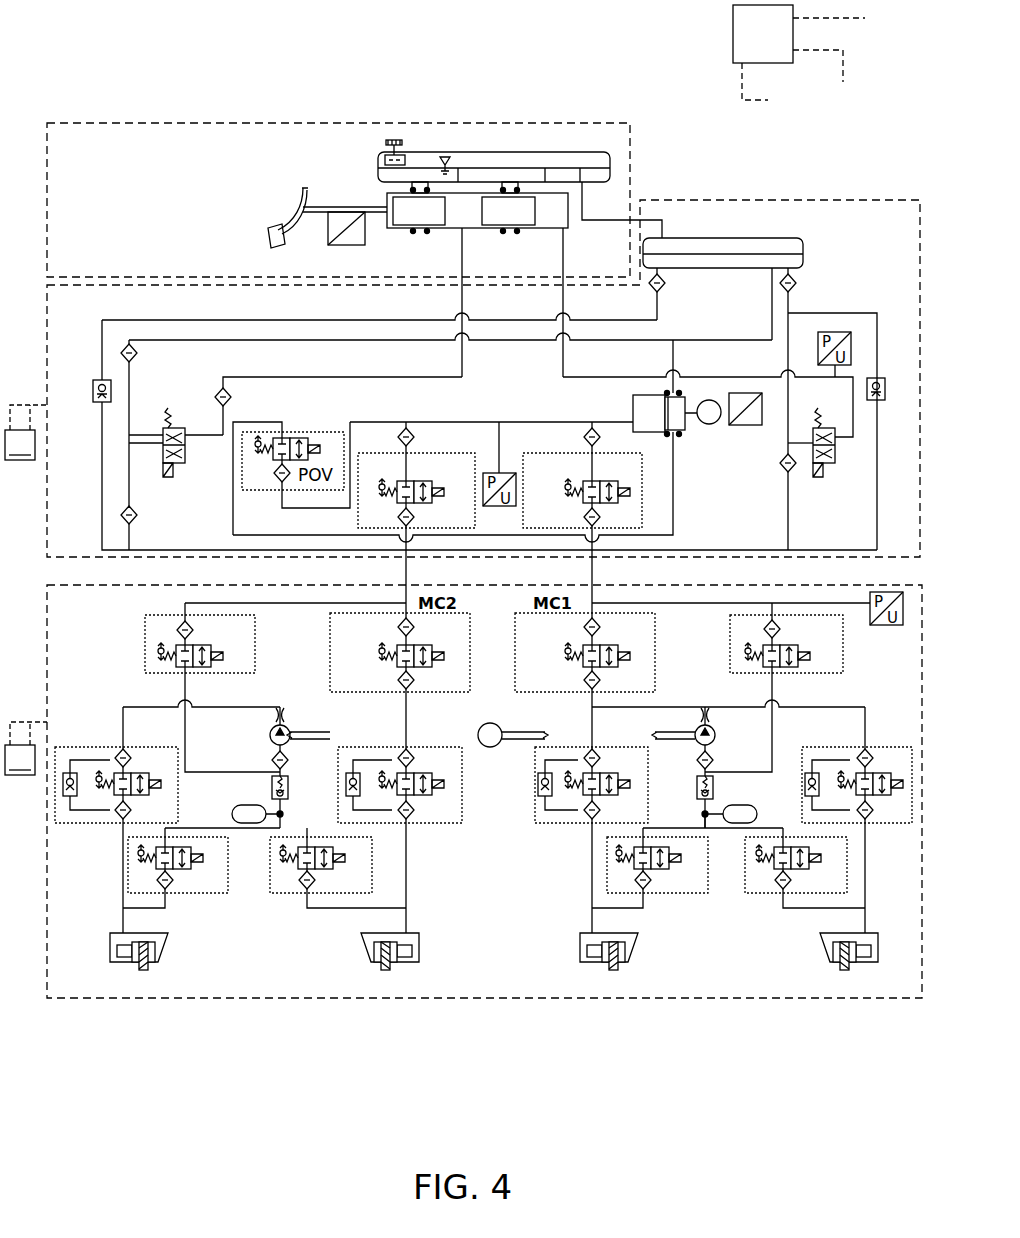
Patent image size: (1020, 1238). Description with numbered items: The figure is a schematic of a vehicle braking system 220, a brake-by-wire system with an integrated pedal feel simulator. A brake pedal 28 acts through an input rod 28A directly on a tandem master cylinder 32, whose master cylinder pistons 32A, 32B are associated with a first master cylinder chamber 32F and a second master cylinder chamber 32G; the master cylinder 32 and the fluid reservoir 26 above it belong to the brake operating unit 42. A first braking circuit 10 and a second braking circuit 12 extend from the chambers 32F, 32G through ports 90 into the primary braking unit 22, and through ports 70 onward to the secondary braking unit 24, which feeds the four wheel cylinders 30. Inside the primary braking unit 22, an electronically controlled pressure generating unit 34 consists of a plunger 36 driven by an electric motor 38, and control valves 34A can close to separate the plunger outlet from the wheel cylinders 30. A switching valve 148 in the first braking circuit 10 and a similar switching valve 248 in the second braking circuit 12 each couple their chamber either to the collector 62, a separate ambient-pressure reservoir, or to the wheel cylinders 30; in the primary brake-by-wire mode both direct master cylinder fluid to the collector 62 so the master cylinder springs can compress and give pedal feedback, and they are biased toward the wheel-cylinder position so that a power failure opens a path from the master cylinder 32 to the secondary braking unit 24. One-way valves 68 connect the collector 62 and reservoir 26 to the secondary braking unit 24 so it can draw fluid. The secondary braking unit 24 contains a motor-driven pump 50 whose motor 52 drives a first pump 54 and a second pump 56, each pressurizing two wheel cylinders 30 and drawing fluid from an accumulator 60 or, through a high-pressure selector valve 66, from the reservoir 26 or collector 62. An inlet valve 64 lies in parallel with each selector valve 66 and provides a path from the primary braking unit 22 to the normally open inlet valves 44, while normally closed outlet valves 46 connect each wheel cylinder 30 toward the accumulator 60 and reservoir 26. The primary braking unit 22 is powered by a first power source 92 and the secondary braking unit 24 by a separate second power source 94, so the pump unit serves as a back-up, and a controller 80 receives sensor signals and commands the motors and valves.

The vehicle braking system 220 is at (563, 58).
The controller 80 is at (770, 46).
The first master cylinder chamber 32F is at (470, 212).
The master cylinder piston 32B is at (533, 205).
The second master cylinder chamber 32G is at (557, 210).
The fluid reservoir 26 is at (614, 152).
The port 90 is at (640, 218).
The primary braking unit 22 is at (790, 200).
The collector 62 is at (805, 250).
The input rod 28A is at (340, 208).
The brake pedal 28 is at (268, 236).
The master cylinder piston 32A is at (413, 230).
The master cylinder 32 is at (458, 236).
The brake operating unit 42 is at (562, 238).
The switching valve 148 is at (173, 425).
The one-way valve 68 is at (92, 392).
The first power source 92 is at (26, 432).
The first braking circuit 10 is at (390, 378).
The second braking circuit 12 is at (575, 378).
The plunger 36 is at (664, 410).
The electric motor 38 is at (709, 398).
The control valve 34A is at (432, 455).
The electronically controlled pressure generating unit 34 is at (681, 441).
The switching valve 248 is at (833, 466).
The port 70 is at (406, 562).
The inlet valve 64 is at (330, 628).
The high-pressure selector valve 66 is at (255, 668).
The inlet valve 44 is at (100, 747).
The first pump 54 is at (270, 740).
The motor 52 is at (498, 726).
The second pump 56 is at (716, 738).
The accumulator 60 is at (236, 810).
The motor-driven pump 50 is at (470, 783).
The outlet valve 46 is at (200, 893).
The wheel cylinder 30 is at (160, 962).
The secondary braking unit 24 is at (680, 1000).
The second power source 94 is at (26, 748).